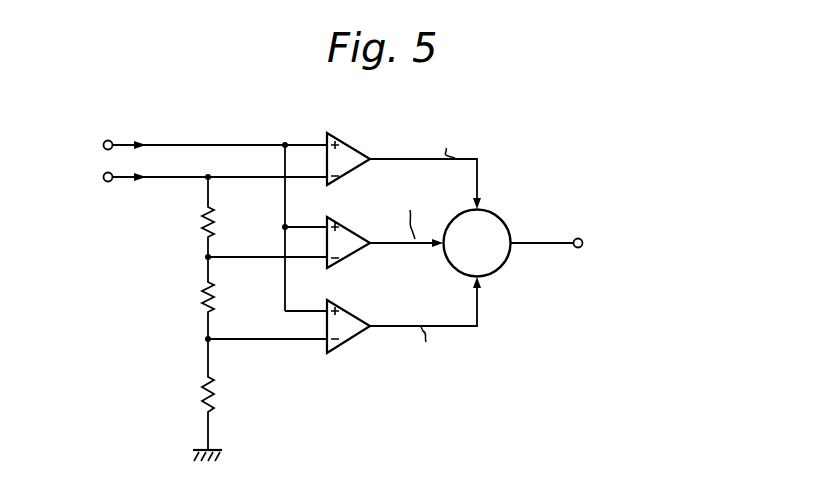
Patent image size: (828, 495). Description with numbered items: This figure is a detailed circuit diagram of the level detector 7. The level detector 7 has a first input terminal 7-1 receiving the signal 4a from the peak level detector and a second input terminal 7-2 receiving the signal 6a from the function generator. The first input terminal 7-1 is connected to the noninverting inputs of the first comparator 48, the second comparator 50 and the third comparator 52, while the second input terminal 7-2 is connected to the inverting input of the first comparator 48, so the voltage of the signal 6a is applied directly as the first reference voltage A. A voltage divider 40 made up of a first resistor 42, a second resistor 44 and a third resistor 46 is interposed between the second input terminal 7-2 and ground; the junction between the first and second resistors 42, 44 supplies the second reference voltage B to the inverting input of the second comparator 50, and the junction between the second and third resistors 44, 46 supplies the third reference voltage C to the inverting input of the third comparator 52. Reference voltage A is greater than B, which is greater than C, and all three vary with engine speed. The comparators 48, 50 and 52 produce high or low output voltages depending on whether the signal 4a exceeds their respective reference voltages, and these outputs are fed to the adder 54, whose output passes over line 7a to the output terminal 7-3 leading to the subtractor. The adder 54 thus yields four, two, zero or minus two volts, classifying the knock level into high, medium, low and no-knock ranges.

The level detector 7 is at (580, 125).
The first input terminal 7-1 is at (103, 145).
The second input terminal 7-2 is at (104, 180).
The output terminal 7-3 is at (582, 237).
The output signal line of the level detector 7a is at (557, 245).
The signal from the peak level detector 4a is at (191, 145).
The signal from the function generator 6a is at (158, 179).
The first reference voltage A is at (263, 179).
The second reference voltage B is at (267, 259).
The third reference voltage C is at (279, 341).
The voltage divider 40 is at (236, 362).
The first resistor 42 is at (215, 225).
The second resistor 44 is at (215, 303).
The third resistor 46 is at (205, 403).
The first comparator 48 is at (353, 152).
The second comparator 50 is at (350, 231).
The third comparator 52 is at (350, 313).
The adder 54 is at (500, 222).